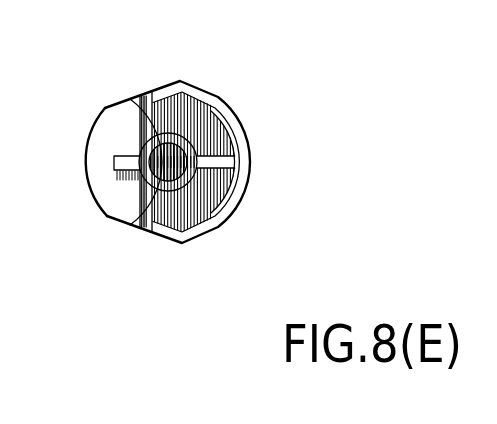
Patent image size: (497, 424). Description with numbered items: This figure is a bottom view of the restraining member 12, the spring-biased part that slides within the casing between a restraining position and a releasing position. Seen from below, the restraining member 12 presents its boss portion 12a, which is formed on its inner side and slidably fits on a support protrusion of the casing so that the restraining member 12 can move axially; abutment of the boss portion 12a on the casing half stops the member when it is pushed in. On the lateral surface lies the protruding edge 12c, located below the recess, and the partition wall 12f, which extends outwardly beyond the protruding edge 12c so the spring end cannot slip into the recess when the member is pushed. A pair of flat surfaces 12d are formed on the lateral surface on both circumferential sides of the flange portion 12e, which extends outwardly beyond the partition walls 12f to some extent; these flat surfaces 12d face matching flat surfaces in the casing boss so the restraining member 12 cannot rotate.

The restraining member 12 is at (238, 55).
The boss portion 12a is at (205, 177).
The protruding edge 12c is at (114, 162).
The flat surfaces 12d is at (128, 98).
The flange portion 12e is at (93, 147).
The partition wall 12f is at (92, 150).